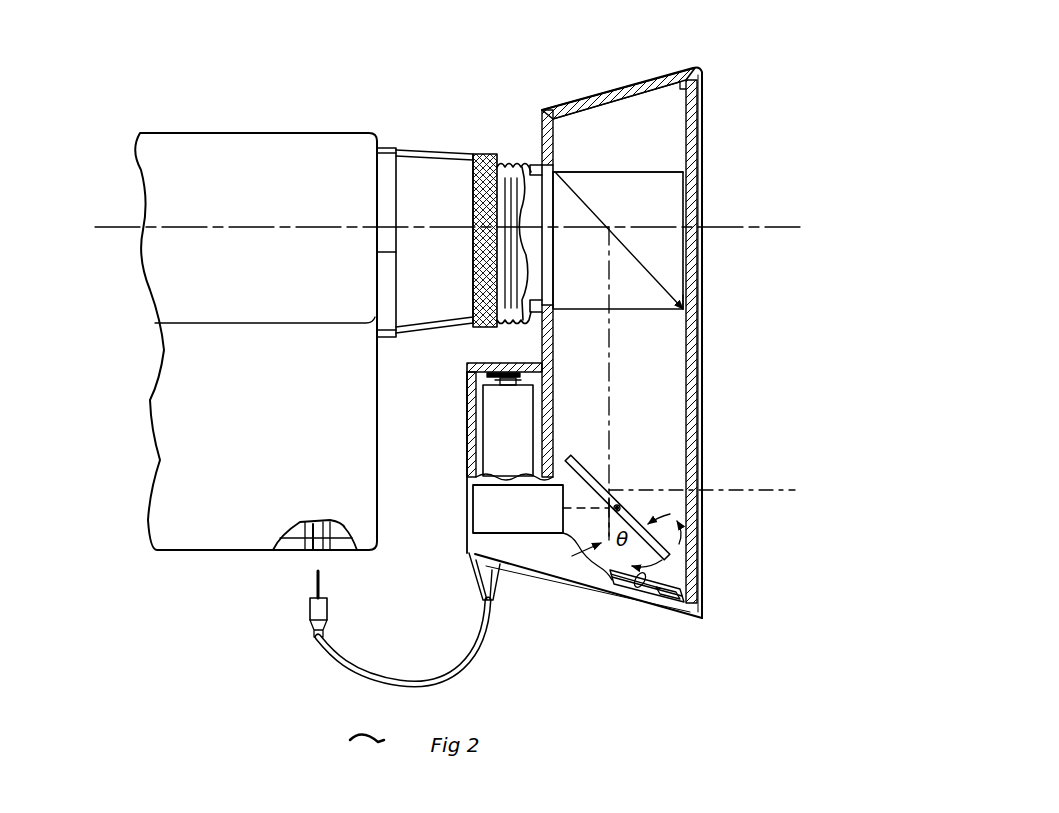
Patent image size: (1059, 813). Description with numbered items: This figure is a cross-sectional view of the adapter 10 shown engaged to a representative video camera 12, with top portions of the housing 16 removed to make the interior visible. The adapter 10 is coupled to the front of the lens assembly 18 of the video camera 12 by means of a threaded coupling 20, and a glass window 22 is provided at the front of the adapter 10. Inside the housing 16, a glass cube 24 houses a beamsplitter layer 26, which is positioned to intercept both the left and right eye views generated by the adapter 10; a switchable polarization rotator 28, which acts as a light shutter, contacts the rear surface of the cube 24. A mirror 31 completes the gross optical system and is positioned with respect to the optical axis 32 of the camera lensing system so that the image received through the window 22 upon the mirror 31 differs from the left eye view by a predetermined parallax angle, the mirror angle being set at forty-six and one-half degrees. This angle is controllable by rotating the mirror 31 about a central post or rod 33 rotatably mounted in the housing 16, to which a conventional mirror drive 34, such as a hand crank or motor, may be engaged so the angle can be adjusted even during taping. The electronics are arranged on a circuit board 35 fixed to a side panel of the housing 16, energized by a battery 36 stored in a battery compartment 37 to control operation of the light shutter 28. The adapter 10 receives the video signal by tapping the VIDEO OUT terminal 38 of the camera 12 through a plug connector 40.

The adapter 10 is at (744, 608).
The video camera 12 is at (307, 133).
The housing 16 is at (602, 93).
The lens assembly 18 is at (435, 292).
The threaded coupling 20 is at (507, 163).
The glass window 22 is at (692, 425).
The glass cube 24 is at (627, 172).
The beamsplitter layer 26 is at (583, 200).
The switchable polarization rotator 28 is at (477, 198).
The mirror 31 is at (582, 455).
The optical axis 32 is at (200, 226).
The central post or rod 33 is at (616, 506).
The mirror drive 34 is at (498, 520).
The circuit board 35 is at (642, 573).
The battery 36 is at (498, 398).
The battery compartment 37 is at (482, 457).
The VIDEO OUT terminal 38 is at (313, 520).
The plug connector 40 is at (310, 601).